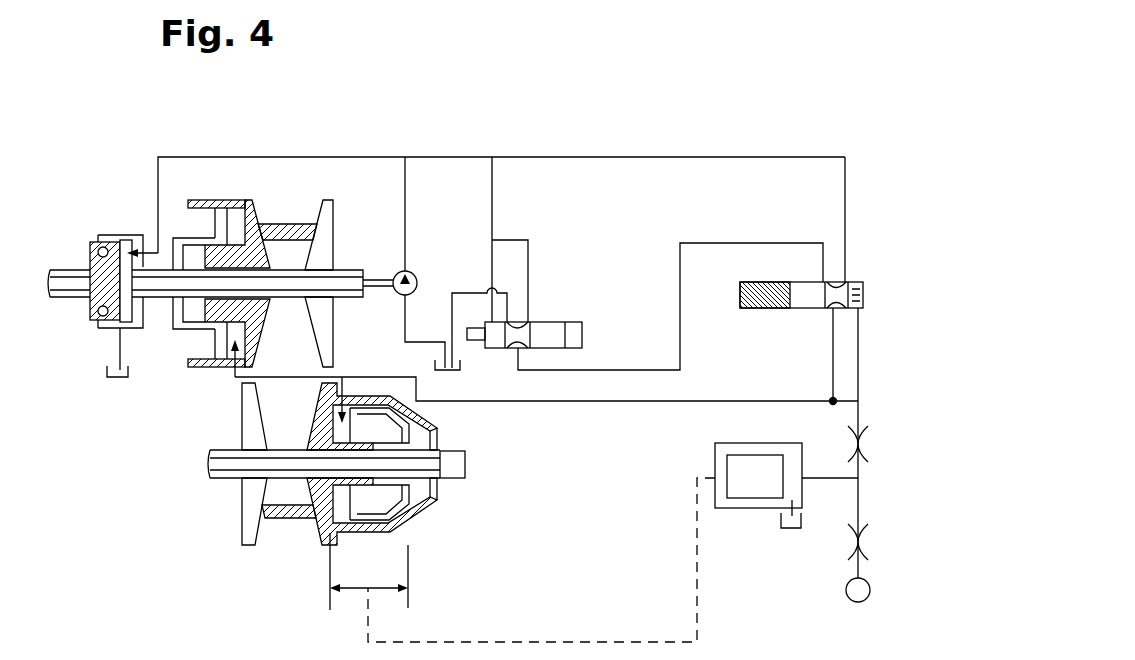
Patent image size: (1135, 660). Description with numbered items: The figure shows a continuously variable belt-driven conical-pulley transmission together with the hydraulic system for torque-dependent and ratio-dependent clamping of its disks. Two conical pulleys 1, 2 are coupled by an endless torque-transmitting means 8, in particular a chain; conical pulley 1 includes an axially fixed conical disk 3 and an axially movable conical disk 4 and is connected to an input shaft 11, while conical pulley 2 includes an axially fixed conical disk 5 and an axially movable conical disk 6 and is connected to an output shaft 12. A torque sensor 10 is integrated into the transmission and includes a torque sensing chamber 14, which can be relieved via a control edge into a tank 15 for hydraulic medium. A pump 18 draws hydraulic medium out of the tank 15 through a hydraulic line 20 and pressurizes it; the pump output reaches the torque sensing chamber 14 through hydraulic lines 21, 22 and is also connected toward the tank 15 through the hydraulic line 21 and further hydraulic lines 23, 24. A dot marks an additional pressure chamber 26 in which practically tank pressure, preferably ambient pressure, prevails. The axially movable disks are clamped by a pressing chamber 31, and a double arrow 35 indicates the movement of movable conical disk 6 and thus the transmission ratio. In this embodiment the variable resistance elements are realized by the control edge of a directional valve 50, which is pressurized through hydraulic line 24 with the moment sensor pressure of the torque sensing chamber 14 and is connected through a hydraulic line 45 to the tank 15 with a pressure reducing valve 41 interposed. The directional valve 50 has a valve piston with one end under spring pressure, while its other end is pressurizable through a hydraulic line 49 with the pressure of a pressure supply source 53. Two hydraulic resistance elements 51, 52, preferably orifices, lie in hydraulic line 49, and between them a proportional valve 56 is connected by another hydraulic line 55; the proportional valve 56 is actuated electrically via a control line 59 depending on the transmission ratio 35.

The conical pulley 1 is at (267, 265).
The conical pulley 2 is at (352, 493).
The axially fixed conical disk 3 is at (330, 225).
The axially movable conical disk 4 is at (254, 203).
The axially fixed conical disk 5 is at (243, 499).
The axially movable conical disk 6 is at (320, 545).
The endless torque-transmitting means 8 is at (284, 518).
The torque sensor 10 is at (126, 267).
The input shaft 11 is at (71, 299).
The output shaft 12 is at (468, 465).
The torque sensing chamber 14 is at (125, 337).
The tank 15 is at (433, 365).
The pump 18 is at (395, 292).
The hydraulic line 20 is at (403, 339).
The hydraulic line 21 is at (407, 207).
The hydraulic line 22 is at (285, 156).
The hydraulic line 23 is at (550, 156).
The hydraulic line 24 is at (847, 205).
The additional pressure chamber 26 is at (840, 402).
The pressing chamber 31 is at (238, 323).
The double arrow / transmission ratio 35 is at (378, 586).
The pressure reducing valve 41 is at (565, 310).
The hydraulic line 45 is at (616, 372).
The hydraulic line 49 is at (860, 367).
The directional valve 50 is at (878, 283).
The hydraulic resistance element 51 is at (862, 450).
The hydraulic resistance element 52 is at (862, 545).
The pressure supply source 53 is at (870, 590).
The hydraulic line 55 is at (825, 480).
The proportional valve 56 is at (740, 509).
The control line 59 is at (568, 402).